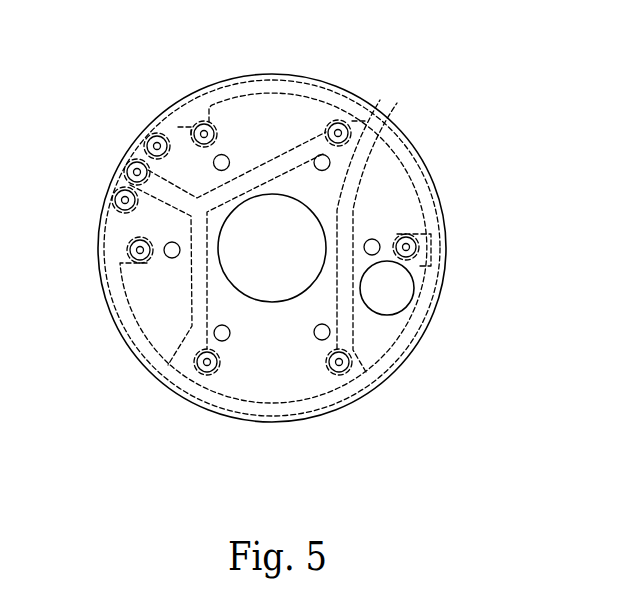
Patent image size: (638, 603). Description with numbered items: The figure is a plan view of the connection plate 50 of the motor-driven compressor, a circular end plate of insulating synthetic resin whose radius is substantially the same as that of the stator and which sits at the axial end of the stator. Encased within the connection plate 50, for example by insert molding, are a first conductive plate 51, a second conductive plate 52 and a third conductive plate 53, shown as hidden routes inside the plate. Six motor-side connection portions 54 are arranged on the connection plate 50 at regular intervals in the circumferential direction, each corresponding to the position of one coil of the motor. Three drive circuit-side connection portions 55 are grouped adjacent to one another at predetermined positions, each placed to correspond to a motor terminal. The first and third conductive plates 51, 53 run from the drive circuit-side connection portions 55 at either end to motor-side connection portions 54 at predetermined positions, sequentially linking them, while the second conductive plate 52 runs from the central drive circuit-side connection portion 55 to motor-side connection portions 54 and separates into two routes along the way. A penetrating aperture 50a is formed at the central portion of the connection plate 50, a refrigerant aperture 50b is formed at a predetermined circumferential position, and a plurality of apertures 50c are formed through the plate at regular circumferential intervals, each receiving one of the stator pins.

The connection plate 50 is at (297, 68).
The penetrating aperture 50a is at (271, 292).
The refrigerant aperture 50b is at (395, 290).
The apertures 50c is at (165, 258).
The first conductive plate 51 is at (254, 430).
The second conductive plate 52 is at (200, 407).
The third conductive plate 53 is at (252, 90).
The motor-side connection portions 54 is at (201, 124).
The drive circuit-side connection portions 55 is at (146, 137).